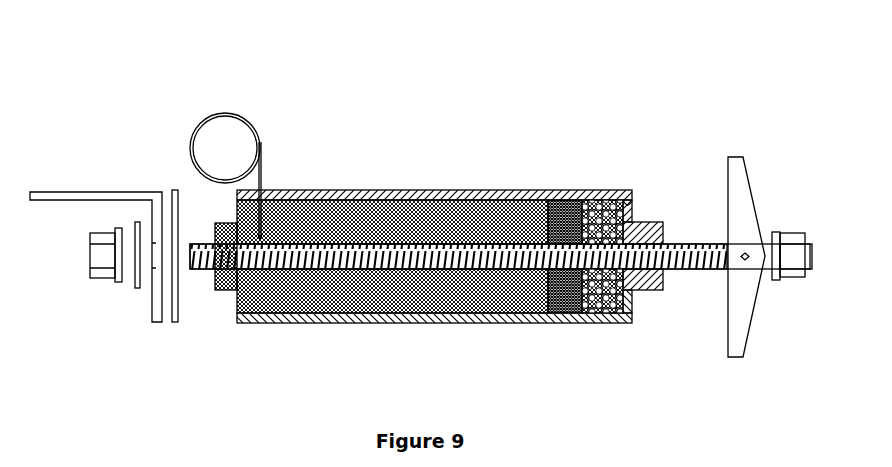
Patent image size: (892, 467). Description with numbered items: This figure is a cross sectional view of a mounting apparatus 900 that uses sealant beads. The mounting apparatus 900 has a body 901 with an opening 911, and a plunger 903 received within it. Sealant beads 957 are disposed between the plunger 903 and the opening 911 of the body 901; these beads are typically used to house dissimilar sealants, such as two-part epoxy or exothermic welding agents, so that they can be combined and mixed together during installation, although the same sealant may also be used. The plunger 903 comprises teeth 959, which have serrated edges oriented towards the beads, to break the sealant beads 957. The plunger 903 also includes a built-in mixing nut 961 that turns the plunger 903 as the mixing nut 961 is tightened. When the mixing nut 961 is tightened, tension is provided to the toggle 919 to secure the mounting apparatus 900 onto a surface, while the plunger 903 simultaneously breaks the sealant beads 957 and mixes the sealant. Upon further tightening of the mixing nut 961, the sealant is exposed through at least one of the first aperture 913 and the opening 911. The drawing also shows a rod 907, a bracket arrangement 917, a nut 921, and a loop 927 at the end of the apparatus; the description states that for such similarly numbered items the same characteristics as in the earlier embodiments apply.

The mounting apparatus 900 is at (288, 63).
The body 901 is at (322, 190).
The plunger 903 is at (387, 206).
The threaded rod 907 is at (375, 258).
The opening 911 is at (655, 233).
The first aperture 913 is at (636, 204).
The mounting bracket assembly 917 is at (210, 331).
The toggle 919 is at (755, 205).
The nut 921 is at (759, 313).
The loop 927 is at (195, 130).
The sealant beads 957 is at (595, 200).
The teeth 959 is at (570, 302).
The mixing nut 961 is at (220, 222).